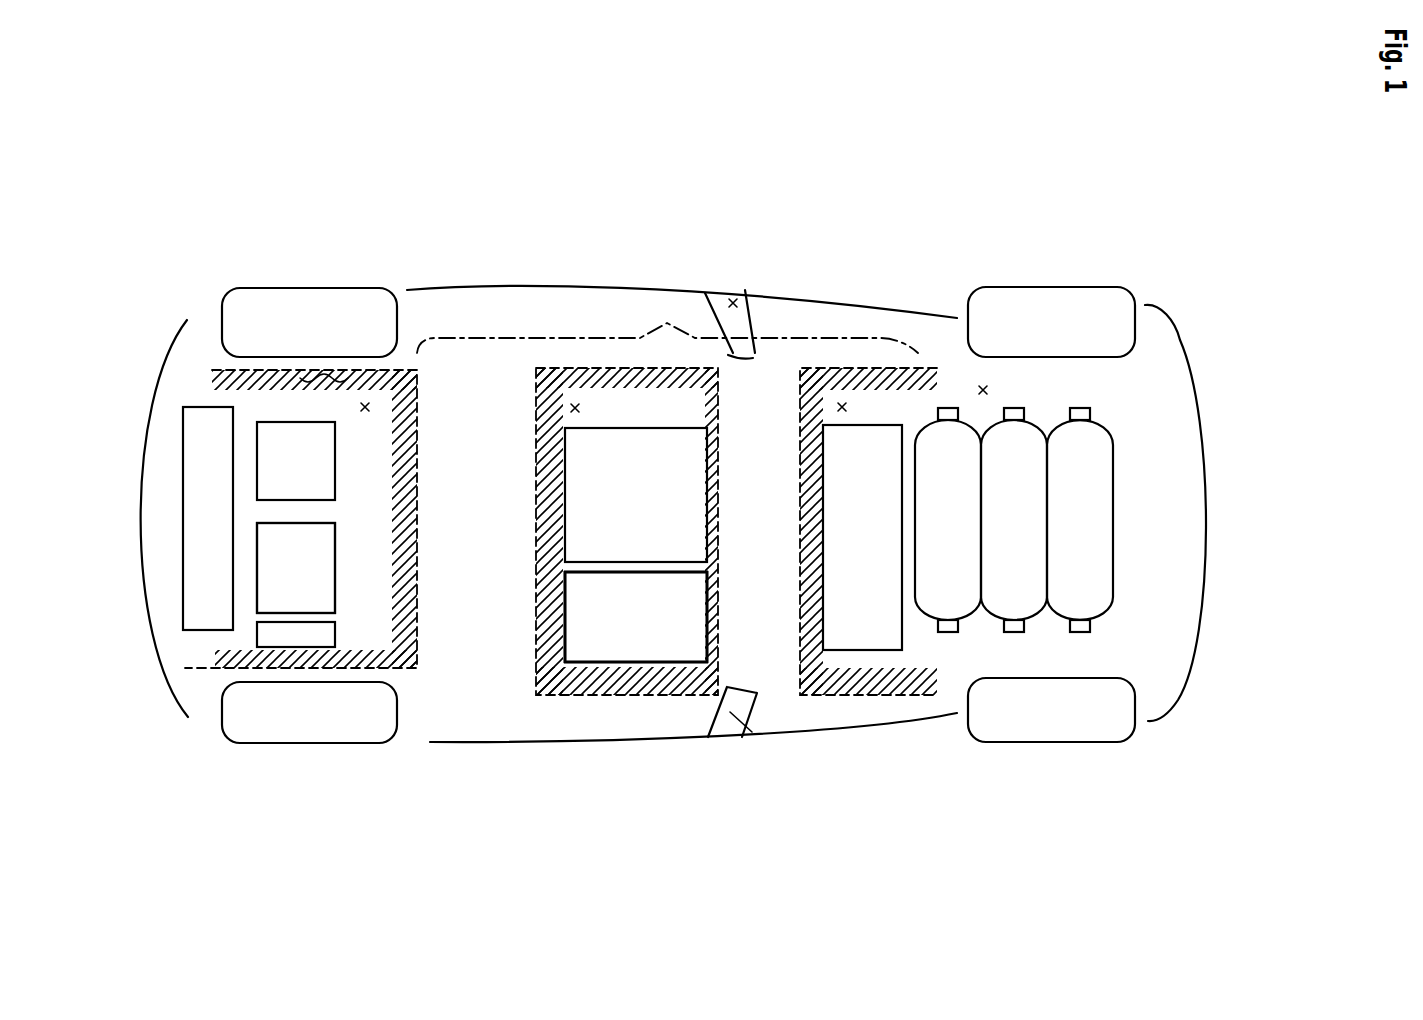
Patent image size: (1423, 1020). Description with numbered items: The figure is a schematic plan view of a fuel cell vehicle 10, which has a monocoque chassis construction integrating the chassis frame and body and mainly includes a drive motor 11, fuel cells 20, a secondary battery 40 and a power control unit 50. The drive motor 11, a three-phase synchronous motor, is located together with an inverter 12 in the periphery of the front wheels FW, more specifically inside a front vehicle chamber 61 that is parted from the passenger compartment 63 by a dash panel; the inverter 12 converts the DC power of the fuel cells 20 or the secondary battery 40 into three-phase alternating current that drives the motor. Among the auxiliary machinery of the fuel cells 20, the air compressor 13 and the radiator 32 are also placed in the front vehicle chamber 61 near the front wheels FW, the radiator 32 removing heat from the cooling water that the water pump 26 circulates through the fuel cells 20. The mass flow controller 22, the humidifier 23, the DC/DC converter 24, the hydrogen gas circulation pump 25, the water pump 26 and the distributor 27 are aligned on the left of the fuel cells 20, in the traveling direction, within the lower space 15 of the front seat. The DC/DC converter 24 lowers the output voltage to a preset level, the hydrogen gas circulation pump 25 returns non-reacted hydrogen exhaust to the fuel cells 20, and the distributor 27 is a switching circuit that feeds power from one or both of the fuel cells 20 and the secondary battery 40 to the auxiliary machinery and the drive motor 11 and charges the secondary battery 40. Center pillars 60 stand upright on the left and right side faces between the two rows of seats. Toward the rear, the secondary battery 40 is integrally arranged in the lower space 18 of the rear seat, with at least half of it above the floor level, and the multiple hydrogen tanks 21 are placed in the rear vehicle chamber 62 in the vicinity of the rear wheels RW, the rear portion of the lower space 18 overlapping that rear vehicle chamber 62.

The fuel cell vehicle 10 is at (973, 207).
The drive motor 11 is at (330, 578).
The inverter 12 is at (330, 578).
The air compressor 13 is at (288, 638).
The lower space of the front seat 15 is at (565, 403).
The lower space of the rear seat 18 is at (840, 406).
The fuel cells 20 is at (582, 478).
The hydrogen tanks 21 is at (1035, 437).
The mass flow controller 22 is at (612, 633).
The humidifier 23 is at (612, 633).
The DC/DC converter 24 is at (612, 633).
The hydrogen gas circulation pump 25 is at (612, 633).
The water pump 26 is at (612, 633).
The distributor 27 is at (612, 633).
The radiator 32 is at (205, 463).
The secondary battery 40 is at (845, 495).
The power control unit 50 is at (323, 463).
The center pillars 60 is at (733, 303).
The front vehicle chamber 61 is at (372, 408).
The rear vehicle chamber 62 is at (983, 390).
The passenger compartment 63 is at (667, 319).
The front wheels FW is at (313, 288).
The rear wheels RW is at (1058, 290).